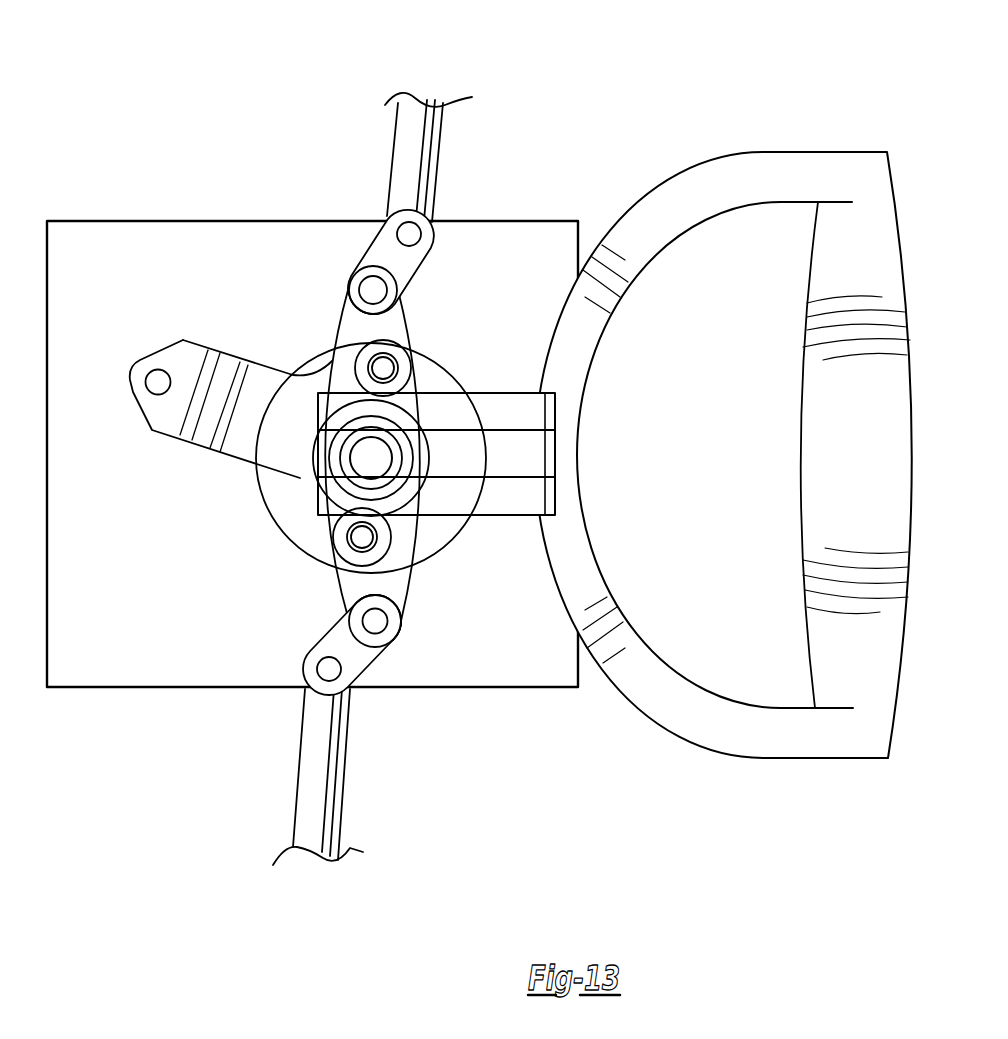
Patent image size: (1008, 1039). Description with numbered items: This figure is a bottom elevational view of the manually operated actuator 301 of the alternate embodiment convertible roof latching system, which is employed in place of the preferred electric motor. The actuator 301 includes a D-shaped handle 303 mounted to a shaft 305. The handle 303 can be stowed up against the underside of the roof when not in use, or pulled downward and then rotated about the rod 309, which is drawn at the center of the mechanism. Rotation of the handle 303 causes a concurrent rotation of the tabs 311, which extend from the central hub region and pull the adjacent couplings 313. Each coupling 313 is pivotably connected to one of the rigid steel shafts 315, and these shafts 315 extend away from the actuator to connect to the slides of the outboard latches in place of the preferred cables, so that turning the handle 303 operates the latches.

The manually operated actuator 301 is at (603, 130).
The D-shaped handle 303 is at (828, 469).
The shaft 305 is at (503, 494).
The rod 309 is at (370, 458).
The tabs 311 is at (355, 326).
The couplings 313 is at (393, 257).
The rigid steel shafts 315 is at (422, 165).